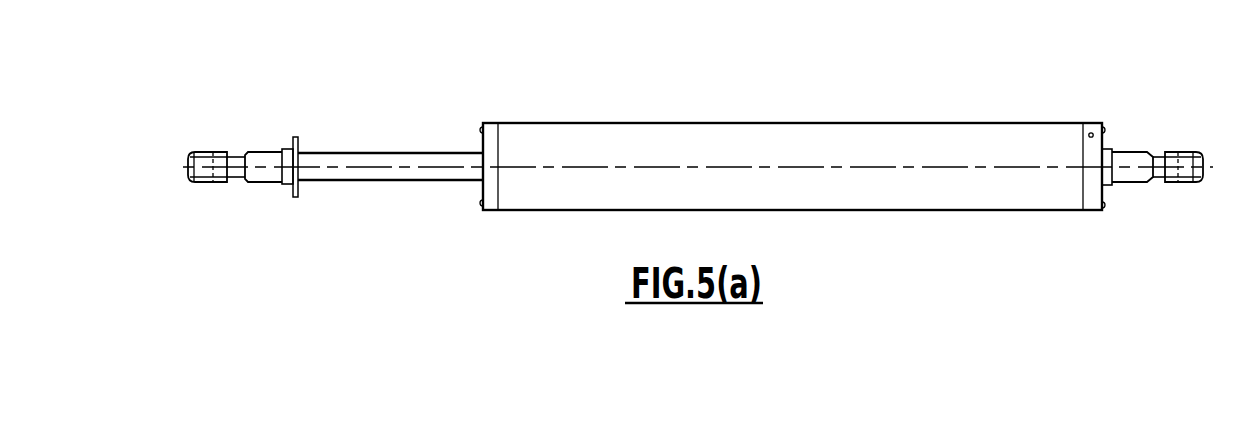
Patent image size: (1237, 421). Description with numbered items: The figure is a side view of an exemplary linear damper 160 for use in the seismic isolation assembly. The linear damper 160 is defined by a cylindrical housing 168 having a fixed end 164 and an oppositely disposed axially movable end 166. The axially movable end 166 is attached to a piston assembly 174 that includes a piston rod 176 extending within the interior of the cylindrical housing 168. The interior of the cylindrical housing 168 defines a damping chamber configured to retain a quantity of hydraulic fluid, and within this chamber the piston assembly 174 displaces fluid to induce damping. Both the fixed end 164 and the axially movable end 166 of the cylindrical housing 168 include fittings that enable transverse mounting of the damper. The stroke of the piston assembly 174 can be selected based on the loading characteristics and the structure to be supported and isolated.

The linear damper 160 is at (943, 46).
The fixed end 164 is at (1173, 152).
The axially movable end 166 is at (207, 152).
The cylindrical housing 168 is at (697, 123).
The piston assembly 174 is at (295, 197).
The piston rod 176 is at (378, 180).